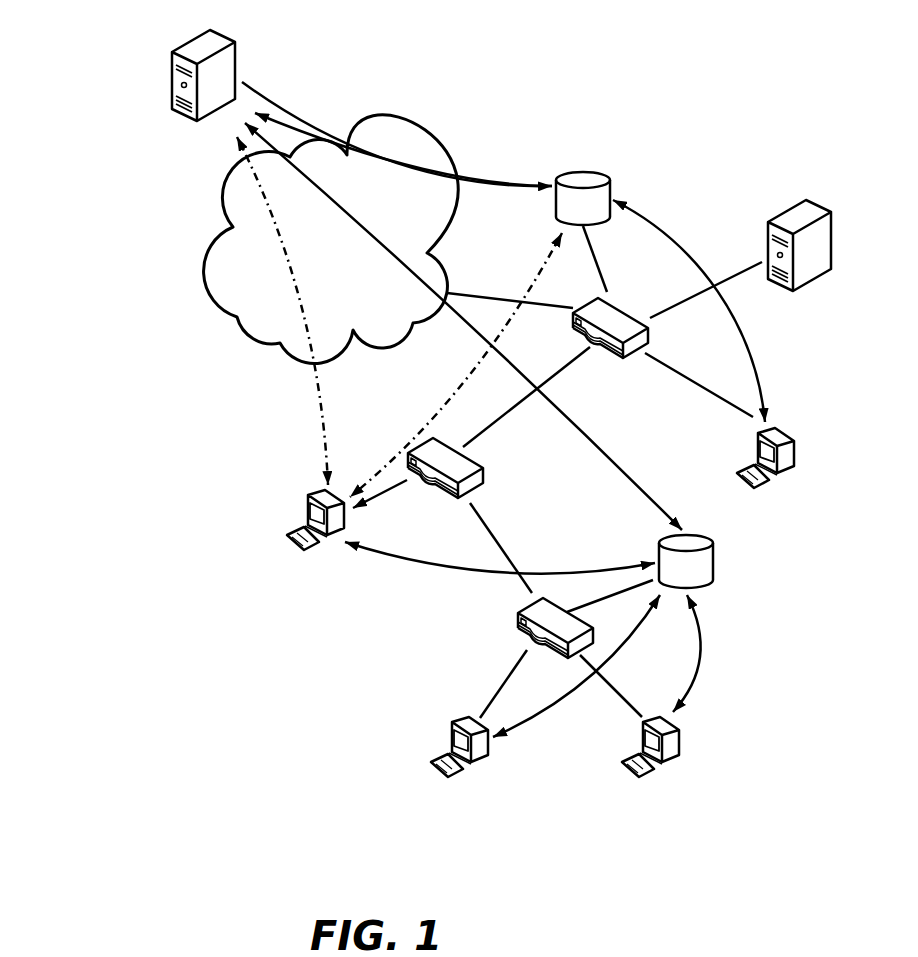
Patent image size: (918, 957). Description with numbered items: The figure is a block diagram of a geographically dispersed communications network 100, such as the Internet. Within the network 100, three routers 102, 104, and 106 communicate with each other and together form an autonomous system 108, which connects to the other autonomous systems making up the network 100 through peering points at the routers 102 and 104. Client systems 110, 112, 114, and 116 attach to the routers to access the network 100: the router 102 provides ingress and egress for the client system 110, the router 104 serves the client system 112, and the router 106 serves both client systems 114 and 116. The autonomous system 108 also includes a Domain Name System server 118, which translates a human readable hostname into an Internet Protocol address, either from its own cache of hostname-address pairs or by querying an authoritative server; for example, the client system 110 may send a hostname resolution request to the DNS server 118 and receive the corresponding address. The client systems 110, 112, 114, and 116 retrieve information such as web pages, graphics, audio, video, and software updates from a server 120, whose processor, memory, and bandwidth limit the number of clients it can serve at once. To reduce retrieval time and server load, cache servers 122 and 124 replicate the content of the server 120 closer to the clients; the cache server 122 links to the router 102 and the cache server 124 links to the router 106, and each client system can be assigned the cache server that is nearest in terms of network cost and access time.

The network 100 is at (180, 283).
The router 102 is at (618, 315).
The router 104 is at (453, 498).
The router 106 is at (518, 618).
The autonomous system 108 is at (657, 140).
The client system 110 is at (757, 430).
The client system 112 is at (312, 500).
The client system 114 is at (455, 722).
The client system 116 is at (642, 718).
The Domain Name System (DNS) server 118 is at (787, 223).
The server 120 is at (188, 53).
The cache server 122 is at (557, 217).
The cache server 124 is at (717, 562).